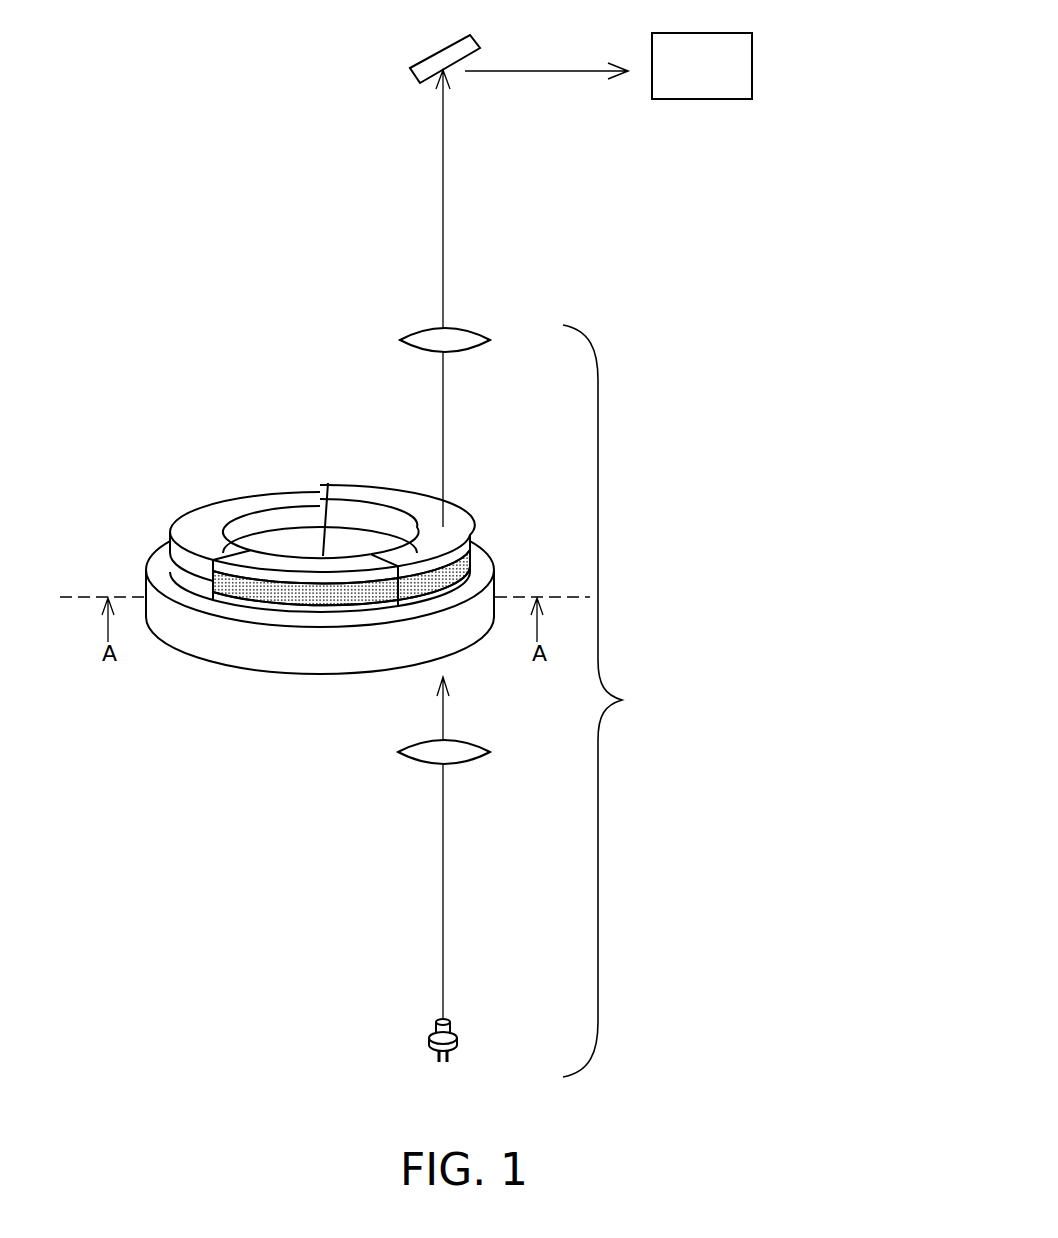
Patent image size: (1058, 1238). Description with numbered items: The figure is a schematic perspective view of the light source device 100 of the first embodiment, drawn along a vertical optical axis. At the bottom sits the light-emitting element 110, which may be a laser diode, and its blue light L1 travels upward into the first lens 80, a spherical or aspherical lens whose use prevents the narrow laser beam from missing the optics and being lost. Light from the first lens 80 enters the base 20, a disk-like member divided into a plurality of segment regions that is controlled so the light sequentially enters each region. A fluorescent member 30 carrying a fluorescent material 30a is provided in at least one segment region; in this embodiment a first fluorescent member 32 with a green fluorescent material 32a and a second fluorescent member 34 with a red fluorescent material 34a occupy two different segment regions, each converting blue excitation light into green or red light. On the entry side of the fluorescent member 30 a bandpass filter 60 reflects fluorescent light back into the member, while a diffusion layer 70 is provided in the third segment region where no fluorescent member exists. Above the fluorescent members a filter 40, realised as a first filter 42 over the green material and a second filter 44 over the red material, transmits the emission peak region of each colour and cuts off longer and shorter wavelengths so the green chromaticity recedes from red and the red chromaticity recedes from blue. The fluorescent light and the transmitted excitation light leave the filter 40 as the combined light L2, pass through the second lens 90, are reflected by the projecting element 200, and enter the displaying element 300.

The light source device 100 is at (616, 701).
The light source (laser) 110 is at (452, 1026).
The light from the light-emitting element L1 is at (445, 860).
The combined light L2 is at (445, 200).
The first lens 80 is at (462, 751).
The second lens 90 is at (462, 339).
The projecting element 200 is at (455, 58).
The displaying element 300 is at (725, 72).
The base 20 is at (445, 648).
The fluorescent member 30 is at (379, 630).
The first fluorescent member 32 is at (465, 570).
The second fluorescent member 34 is at (243, 592).
The fluorescent material 30a is at (411, 636).
The green fluorescent material 32a is at (463, 548).
The red fluorescent material 34a is at (313, 597).
The filter 40 is at (383, 605).
The first filter 42 is at (445, 509).
The second filter 44 is at (373, 567).
The bandpass filter 60 is at (152, 580).
The diffusion layer 70 is at (176, 552).